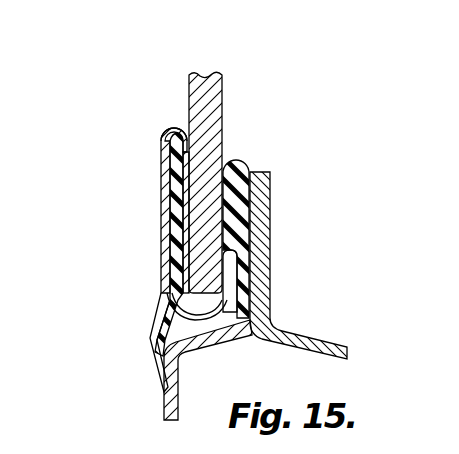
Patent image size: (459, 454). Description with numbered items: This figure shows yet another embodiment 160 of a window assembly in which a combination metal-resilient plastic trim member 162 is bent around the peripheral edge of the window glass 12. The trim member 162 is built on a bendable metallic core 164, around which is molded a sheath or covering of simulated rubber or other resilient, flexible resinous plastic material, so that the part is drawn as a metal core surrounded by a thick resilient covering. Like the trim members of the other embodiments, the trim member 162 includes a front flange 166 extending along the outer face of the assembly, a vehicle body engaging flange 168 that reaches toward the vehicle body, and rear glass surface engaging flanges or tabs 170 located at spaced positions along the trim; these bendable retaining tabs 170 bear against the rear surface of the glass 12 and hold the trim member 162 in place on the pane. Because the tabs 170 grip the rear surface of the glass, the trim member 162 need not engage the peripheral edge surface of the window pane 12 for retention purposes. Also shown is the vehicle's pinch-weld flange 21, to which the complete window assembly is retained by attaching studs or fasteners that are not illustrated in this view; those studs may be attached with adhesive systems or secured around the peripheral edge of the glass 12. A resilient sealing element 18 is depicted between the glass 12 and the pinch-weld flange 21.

The window glass 12 is at (222, 88).
The sealing gasket 18 is at (250, 163).
The pinch-weld flange 21 is at (270, 207).
The window assembly embodiment 160 is at (165, 238).
The combination metal-resilient plastic trim member 162 is at (158, 156).
The bendable metallic core 164 is at (165, 247).
The front flange 166 is at (165, 195).
The vehicle body engaging flange 168 is at (153, 352).
The rear glass surface engaging flanges or tabs 170 is at (237, 283).